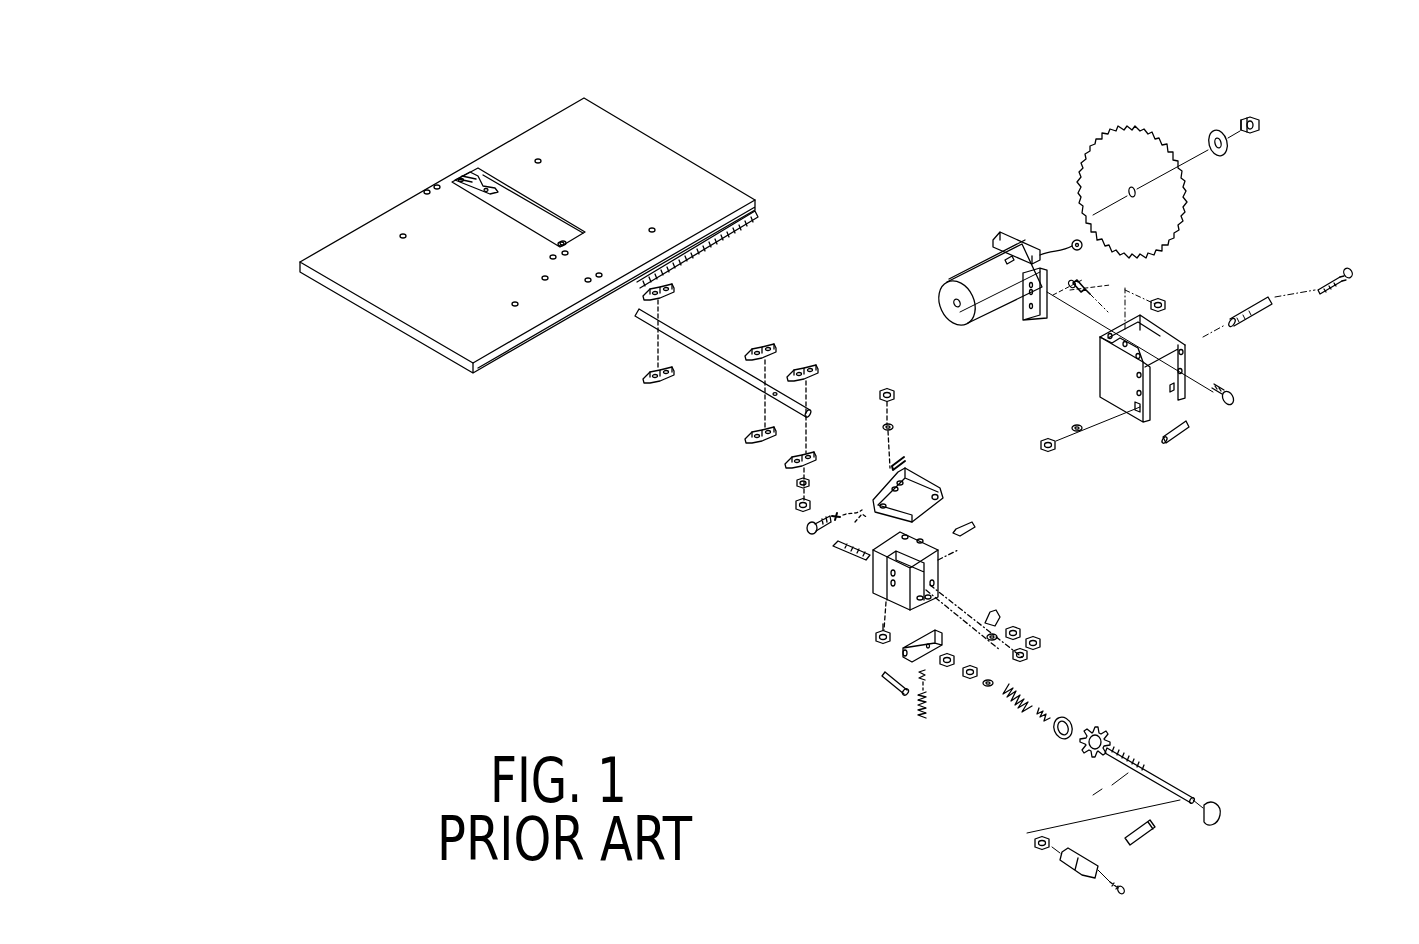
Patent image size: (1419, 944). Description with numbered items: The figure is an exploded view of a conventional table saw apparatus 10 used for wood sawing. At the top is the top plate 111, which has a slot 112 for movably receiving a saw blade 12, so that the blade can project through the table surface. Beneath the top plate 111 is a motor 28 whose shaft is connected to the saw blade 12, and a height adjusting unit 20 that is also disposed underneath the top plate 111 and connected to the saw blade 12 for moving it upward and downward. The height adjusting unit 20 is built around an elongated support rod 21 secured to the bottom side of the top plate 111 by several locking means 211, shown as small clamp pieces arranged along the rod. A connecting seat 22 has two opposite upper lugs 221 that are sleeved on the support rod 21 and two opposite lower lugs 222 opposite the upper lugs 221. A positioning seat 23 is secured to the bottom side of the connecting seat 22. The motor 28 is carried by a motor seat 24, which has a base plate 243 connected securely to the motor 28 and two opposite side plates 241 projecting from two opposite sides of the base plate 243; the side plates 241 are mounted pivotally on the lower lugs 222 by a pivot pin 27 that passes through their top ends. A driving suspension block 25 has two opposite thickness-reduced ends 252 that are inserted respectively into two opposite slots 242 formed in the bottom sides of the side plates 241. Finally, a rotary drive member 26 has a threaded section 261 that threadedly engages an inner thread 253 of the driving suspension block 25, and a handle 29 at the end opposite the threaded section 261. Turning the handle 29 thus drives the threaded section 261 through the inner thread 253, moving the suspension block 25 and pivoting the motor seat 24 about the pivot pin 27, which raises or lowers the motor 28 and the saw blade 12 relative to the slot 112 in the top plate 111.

The table saw apparatus 10 is at (529, 199).
The top plate 111 is at (362, 248).
The slot 112 is at (505, 203).
The saw blade 12 is at (1122, 137).
The height adjusting unit 20 is at (955, 576).
The support rod 21 is at (727, 367).
The locking means 211 is at (767, 345).
The connecting seat 22 is at (918, 483).
The upper lugs 221 is at (897, 470).
The lower lugs 222 is at (872, 510).
The positioning seat 23 is at (873, 575).
The motor seat 24 is at (1120, 369).
The side plates 241 is at (1105, 383).
The slots 242 is at (1137, 413).
The base plate 243 is at (1117, 328).
The driving suspension block 25 is at (940, 638).
The thickness-reduced ends 252 is at (903, 655).
The inner thread 253 is at (932, 650).
The rotary drive member 26 is at (1168, 780).
The threaded section 261 is at (1133, 758).
The pivot pin 27 is at (1242, 303).
The motor 28 is at (967, 270).
The handle 29 is at (1075, 865).